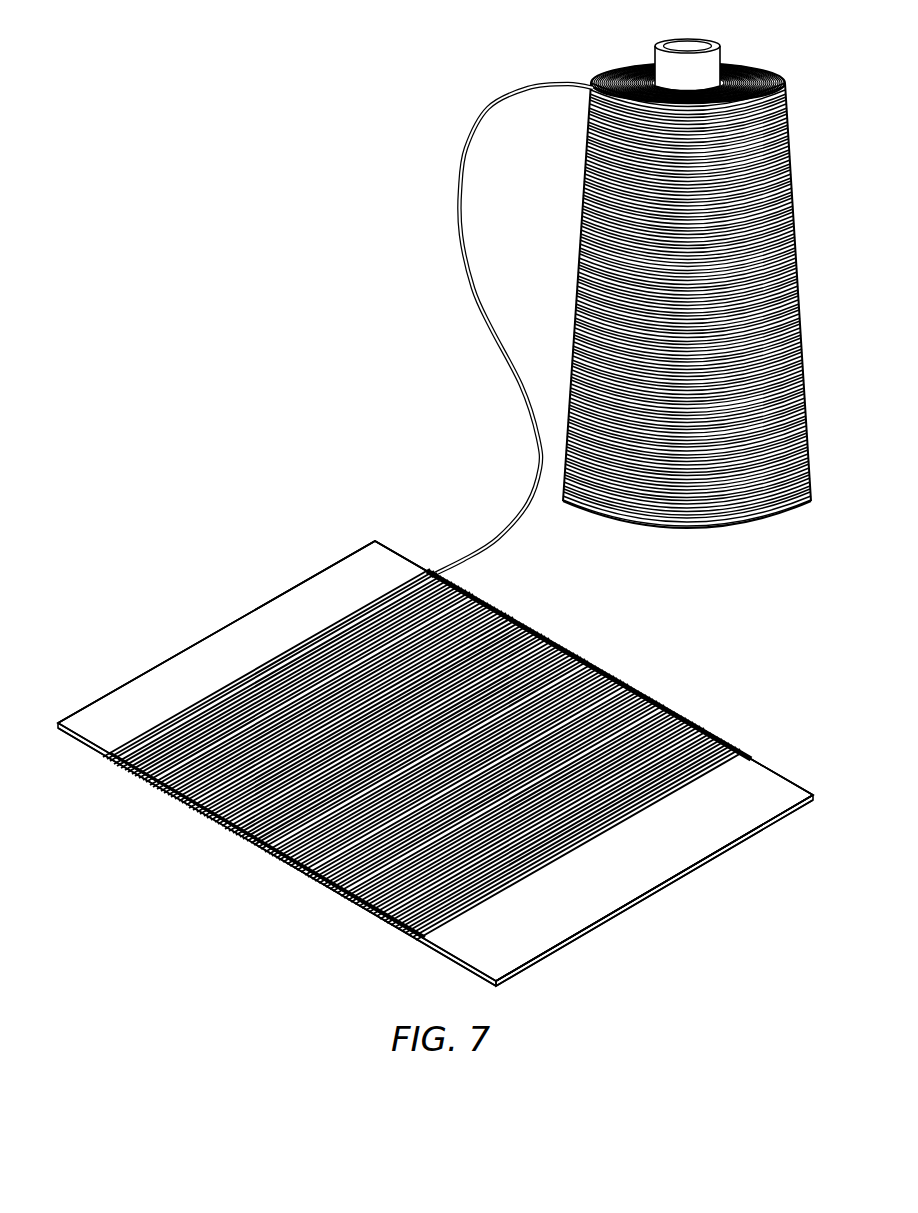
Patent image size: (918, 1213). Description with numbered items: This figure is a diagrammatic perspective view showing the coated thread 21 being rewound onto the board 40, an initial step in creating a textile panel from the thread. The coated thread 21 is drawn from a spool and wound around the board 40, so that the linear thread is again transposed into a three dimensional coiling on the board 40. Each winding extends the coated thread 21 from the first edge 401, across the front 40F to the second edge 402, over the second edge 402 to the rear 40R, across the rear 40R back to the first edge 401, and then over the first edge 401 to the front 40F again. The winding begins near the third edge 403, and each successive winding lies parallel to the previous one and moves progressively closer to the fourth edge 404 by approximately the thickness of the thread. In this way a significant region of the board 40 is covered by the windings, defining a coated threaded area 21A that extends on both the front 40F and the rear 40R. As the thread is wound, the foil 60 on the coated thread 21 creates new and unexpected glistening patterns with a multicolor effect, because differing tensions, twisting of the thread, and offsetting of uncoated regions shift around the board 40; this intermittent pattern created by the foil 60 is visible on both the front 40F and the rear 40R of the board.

The coated thread 21 is at (505, 510).
The coated threaded area 21A is at (412, 938).
The board 40 is at (397, 556).
The front 40F is at (626, 874).
The rear 40R is at (602, 910).
The foil 60 is at (552, 630).
The first edge 401 is at (767, 763).
The second edge 402 is at (453, 953).
The third edge 403 is at (697, 855).
The fourth edge 404 is at (223, 615).